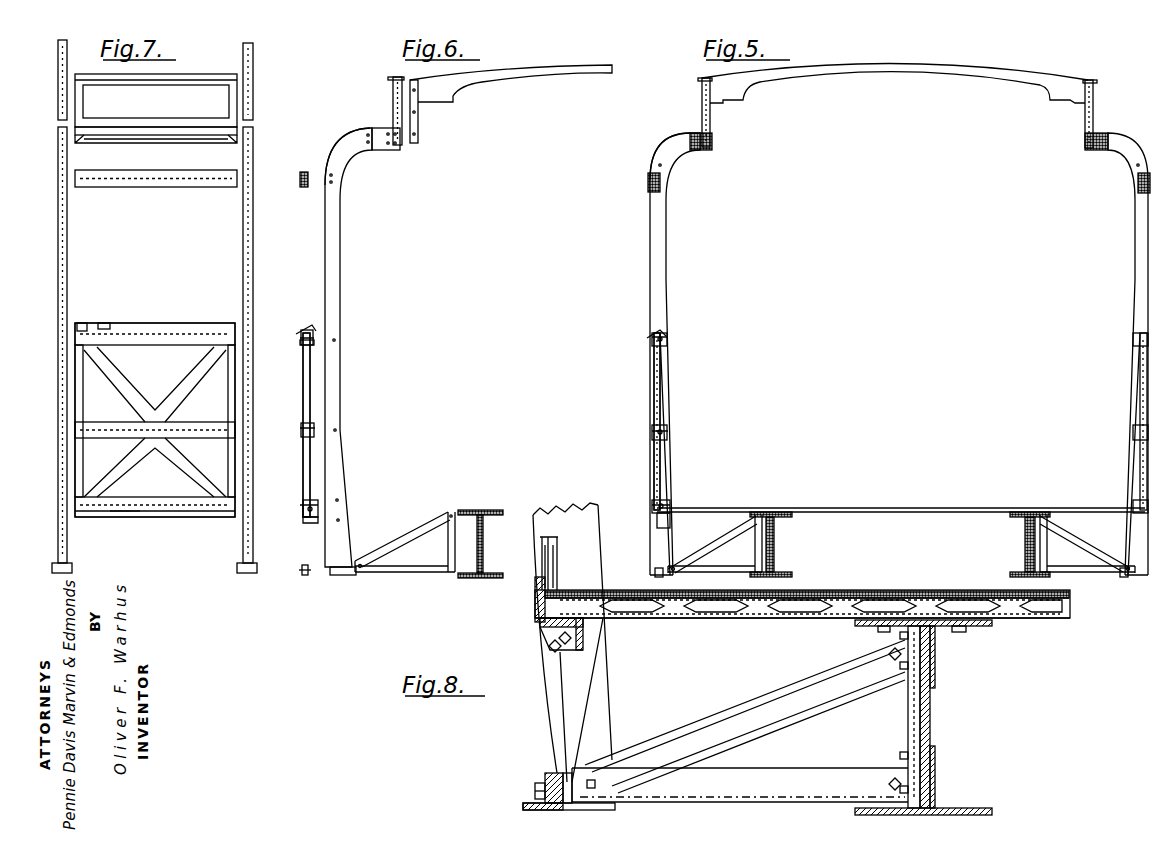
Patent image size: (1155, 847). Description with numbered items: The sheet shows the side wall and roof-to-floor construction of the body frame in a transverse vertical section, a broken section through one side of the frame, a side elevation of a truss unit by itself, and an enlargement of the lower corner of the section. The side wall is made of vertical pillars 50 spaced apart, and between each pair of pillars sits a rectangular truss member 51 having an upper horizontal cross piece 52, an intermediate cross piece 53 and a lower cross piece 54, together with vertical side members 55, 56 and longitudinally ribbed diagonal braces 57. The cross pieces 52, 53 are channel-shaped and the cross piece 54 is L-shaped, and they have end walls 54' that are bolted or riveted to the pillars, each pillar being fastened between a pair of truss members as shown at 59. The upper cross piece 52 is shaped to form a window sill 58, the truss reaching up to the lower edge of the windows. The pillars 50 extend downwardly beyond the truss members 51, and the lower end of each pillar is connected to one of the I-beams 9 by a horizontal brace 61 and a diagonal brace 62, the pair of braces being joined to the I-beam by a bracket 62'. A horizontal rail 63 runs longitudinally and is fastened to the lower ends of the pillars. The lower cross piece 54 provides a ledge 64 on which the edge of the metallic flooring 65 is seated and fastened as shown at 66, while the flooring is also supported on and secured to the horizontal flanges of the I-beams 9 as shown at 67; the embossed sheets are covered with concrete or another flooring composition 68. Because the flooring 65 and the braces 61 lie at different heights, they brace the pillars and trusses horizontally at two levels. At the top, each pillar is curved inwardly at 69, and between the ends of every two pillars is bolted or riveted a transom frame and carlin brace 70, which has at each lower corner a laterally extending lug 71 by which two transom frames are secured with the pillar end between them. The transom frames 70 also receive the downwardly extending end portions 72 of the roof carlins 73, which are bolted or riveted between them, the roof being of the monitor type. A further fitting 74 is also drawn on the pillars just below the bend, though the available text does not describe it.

In FIG. 6, the I-beam 9 is at (482, 535).
In FIG. 5, the I-beam 9 is at (780, 541).
In FIG. 8, the I-beam 9 is at (932, 704).
In FIG. 7, the vertical pillar 50 is at (67, 252).
In FIG. 6, the vertical pillar 50 is at (340, 239).
In FIG. 5, the vertical pillar 50 is at (666, 243).
In FIG. 7, the rectangular truss member 51 is at (155, 420).
In FIG. 6, the rectangular truss member 51 is at (299, 457).
In FIG. 5, the rectangular truss member 51 is at (645, 391).
In FIG. 7, the upper horizontal cross piece 52 is at (140, 334).
In FIG. 6, the upper horizontal cross piece 52 is at (301, 341).
In FIG. 5, the upper horizontal cross piece 52 is at (654, 345).
In FIG. 7, the intermediate horizontal cross piece 53 is at (100, 424).
In FIG. 6, the intermediate horizontal cross piece 53 is at (301, 429).
In FIG. 5, the intermediate horizontal cross piece 53 is at (652, 436).
In FIG. 7, the lower horizontal cross piece 54 is at (155, 496).
In FIG. 6, the lower horizontal cross piece 54 is at (292, 506).
In FIG. 5, the lower horizontal cross piece 54 is at (880, 492).
In FIG. 8, the lower horizontal cross piece 54 is at (517, 599).
In FIG. 7, the end wall 54' is at (91, 308).
In FIG. 6, the end wall 54' is at (345, 405).
In FIG. 5, the end wall 54' is at (698, 408).
In FIG. 8, the end wall 54' is at (584, 639).
In FIG. 7, the vertical side member 55 is at (76, 378).
In FIG. 7, the vertical side member 56 is at (231, 380).
In FIG. 7, the diagonal brace 57 is at (197, 363).
In FIG. 6, the diagonal brace 57 is at (312, 383).
In FIG. 5, the diagonal brace 57 is at (662, 380).
In FIG. 7, the window sill 58 is at (110, 327).
In FIG. 6, the window sill 58 is at (300, 326).
In FIG. 5, the window sill 58 is at (650, 335).
In FIG. 5, the bolted or riveted connection 59 is at (666, 342).
In FIG. 8, the bolted or riveted connection 59 is at (565, 650).
In FIG. 6, the horizontal brace 61 is at (393, 570).
In FIG. 5, the horizontal brace 61 is at (728, 566).
In FIG. 8, the horizontal brace 61 is at (778, 775).
In FIG. 6, the diagonal brace 62 is at (403, 540).
In FIG. 5, the diagonal brace 62 is at (901, 544).
In FIG. 8, the diagonal brace 62 is at (745, 706).
In FIG. 6, the bracket 62' is at (427, 555).
In FIG. 5, the bracket 62' is at (901, 543).
In FIG. 8, the bracket 62' is at (758, 732).
In FIG. 6, the horizontal rail 63 is at (303, 571).
In FIG. 5, the horizontal rail 63 is at (872, 561).
In FIG. 8, the horizontal rail 63 is at (533, 790).
In FIG. 7, the ledge 64 is at (121, 509).
In FIG. 6, the ledge 64 is at (318, 509).
In FIG. 5, the ledge 64 is at (658, 520).
In FIG. 8, the ledge 64 is at (551, 588).
In FIG. 5, the metallic flooring 65 is at (901, 487).
In FIG. 8, the metallic flooring 65 is at (684, 619).
In FIG. 8, the fastening of flooring to ledges 66 is at (543, 631).
In FIG. 8, the fastening of flooring to I-beam flanges 67 is at (952, 590).
In FIG. 8, the flooring composition covering 68 is at (838, 590).
In FIG. 6, the inward curve of pillar 69 is at (340, 138).
In FIG. 5, the inward curve of pillar 69 is at (670, 130).
In FIG. 7, the transom frame and carlin brace 70 is at (192, 79).
In FIG. 6, the transom frame and carlin brace 70 is at (393, 100).
In FIG. 5, the transom frame and carlin brace 70 is at (702, 100).
In FIG. 7, the laterally extending lug 71 is at (90, 140).
In FIG. 6, the laterally extending lug 71 is at (388, 150).
In FIG. 5, the laterally extending lug 71 is at (705, 150).
In FIG. 6, the downwardly extending end portion 72 is at (418, 129).
In FIG. 6, the roof carlin 73 is at (482, 82).
In FIG. 5, the roof carlin 73 is at (818, 78).
In FIG. 7, the clip 74 is at (160, 186).
In FIG. 6, the clip 74 is at (300, 178).
In FIG. 5, the clip 74 is at (648, 185).